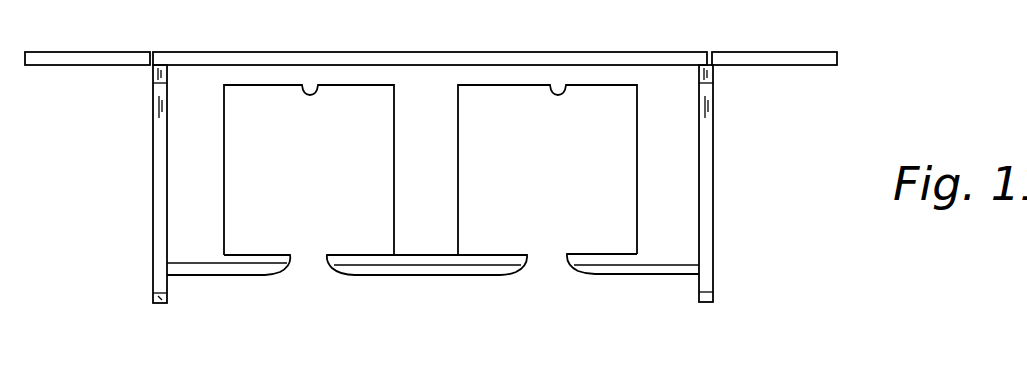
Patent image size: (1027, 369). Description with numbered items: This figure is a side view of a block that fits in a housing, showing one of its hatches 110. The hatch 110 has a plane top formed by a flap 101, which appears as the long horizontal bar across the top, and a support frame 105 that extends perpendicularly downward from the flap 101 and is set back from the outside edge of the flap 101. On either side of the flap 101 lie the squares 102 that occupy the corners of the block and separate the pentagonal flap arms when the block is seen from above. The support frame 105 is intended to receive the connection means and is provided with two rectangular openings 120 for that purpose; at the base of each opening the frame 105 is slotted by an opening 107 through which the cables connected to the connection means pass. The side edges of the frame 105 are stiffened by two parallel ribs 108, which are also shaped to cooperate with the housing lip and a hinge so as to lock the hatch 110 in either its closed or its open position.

The flap 101 is at (440, 58).
The square 102 is at (90, 50).
The support frame 105 is at (200, 240).
The opening 107 is at (307, 262).
The rib 108 is at (153, 212).
The hatch 110 is at (503, 283).
The rectangular opening 120 is at (303, 85).